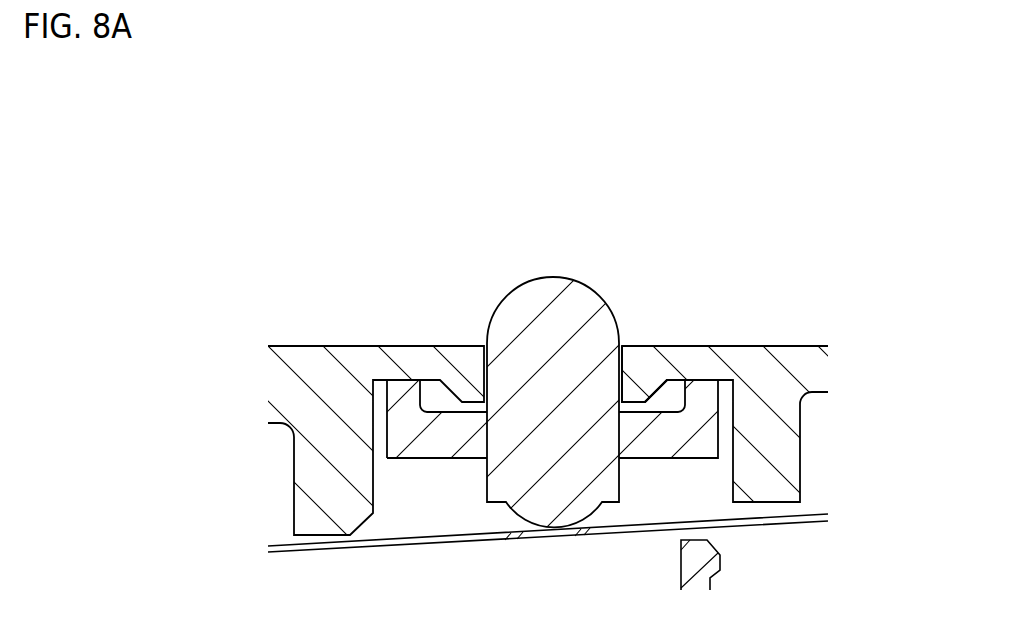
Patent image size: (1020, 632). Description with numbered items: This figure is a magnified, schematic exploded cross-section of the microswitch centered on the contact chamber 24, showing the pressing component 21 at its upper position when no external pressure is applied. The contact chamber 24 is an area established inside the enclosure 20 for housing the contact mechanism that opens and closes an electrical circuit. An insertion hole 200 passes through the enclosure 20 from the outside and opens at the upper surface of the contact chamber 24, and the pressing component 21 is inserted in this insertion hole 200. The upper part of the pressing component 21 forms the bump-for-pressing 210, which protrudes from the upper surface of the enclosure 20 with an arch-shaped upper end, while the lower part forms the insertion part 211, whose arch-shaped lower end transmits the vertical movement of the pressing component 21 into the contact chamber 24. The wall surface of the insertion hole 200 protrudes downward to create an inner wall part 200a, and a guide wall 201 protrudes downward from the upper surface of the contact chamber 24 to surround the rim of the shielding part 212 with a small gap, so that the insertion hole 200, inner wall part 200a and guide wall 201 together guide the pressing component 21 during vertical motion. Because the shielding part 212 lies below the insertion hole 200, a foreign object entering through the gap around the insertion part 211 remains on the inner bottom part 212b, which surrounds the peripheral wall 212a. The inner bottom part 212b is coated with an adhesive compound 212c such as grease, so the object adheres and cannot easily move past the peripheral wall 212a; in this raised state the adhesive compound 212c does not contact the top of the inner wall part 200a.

The enclosure 20 is at (302, 346).
The pressing component 21 is at (602, 160).
The contact chamber 24 is at (433, 498).
The insertion hole 200 is at (636, 397).
The inner wall part 200a is at (640, 377).
The guide wall 201 is at (767, 469).
The bump-for-pressing 210 is at (535, 277).
The insertion part 211 is at (557, 482).
The shielding part 212 is at (510, 213).
The peripheral wall 212a is at (393, 392).
The inner bottom part 212b is at (438, 397).
The adhesive compound 212c is at (473, 410).